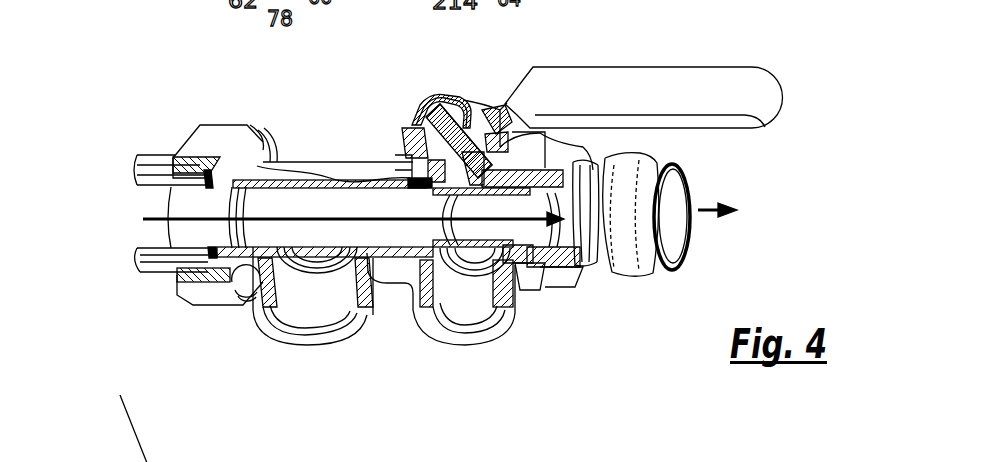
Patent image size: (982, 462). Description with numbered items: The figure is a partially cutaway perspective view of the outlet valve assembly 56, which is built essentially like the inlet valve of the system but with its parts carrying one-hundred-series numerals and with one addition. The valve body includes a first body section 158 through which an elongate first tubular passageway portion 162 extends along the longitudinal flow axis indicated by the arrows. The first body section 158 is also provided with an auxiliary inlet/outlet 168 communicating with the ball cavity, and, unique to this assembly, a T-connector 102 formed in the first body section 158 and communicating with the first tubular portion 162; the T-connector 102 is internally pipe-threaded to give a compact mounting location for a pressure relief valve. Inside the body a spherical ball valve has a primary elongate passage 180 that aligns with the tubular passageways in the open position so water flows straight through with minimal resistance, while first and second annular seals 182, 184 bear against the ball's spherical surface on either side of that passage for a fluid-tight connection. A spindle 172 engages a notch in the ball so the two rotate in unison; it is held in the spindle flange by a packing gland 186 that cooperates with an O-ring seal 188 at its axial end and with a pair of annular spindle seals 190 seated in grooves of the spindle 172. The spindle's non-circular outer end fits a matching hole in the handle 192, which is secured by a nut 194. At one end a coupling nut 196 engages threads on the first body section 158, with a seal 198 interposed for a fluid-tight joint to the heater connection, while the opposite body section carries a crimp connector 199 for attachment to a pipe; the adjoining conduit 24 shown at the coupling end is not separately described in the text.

The tube end 24 is at (152, 177).
The outlet valve assembly 56 is at (716, 40).
The T-connector 102 is at (297, 310).
The first body section 158 is at (365, 173).
The first tubular passageway portion 162 is at (340, 232).
The auxiliary inlet/outlet 168 is at (467, 315).
The spindle 172 is at (453, 100).
The primary elongate passage 180 is at (583, 267).
The first annular seal 182 is at (413, 253).
The second annular seal 184 is at (514, 290).
The packing gland 186 is at (425, 140).
The O-ring seal 188 is at (400, 140).
The annular spindle seals 190 is at (482, 117).
The handle 192 is at (648, 87).
The nut 194 is at (415, 103).
The coupling nut 196 is at (207, 140).
The seal 198 is at (208, 273).
The crimp connector 199 is at (673, 235).